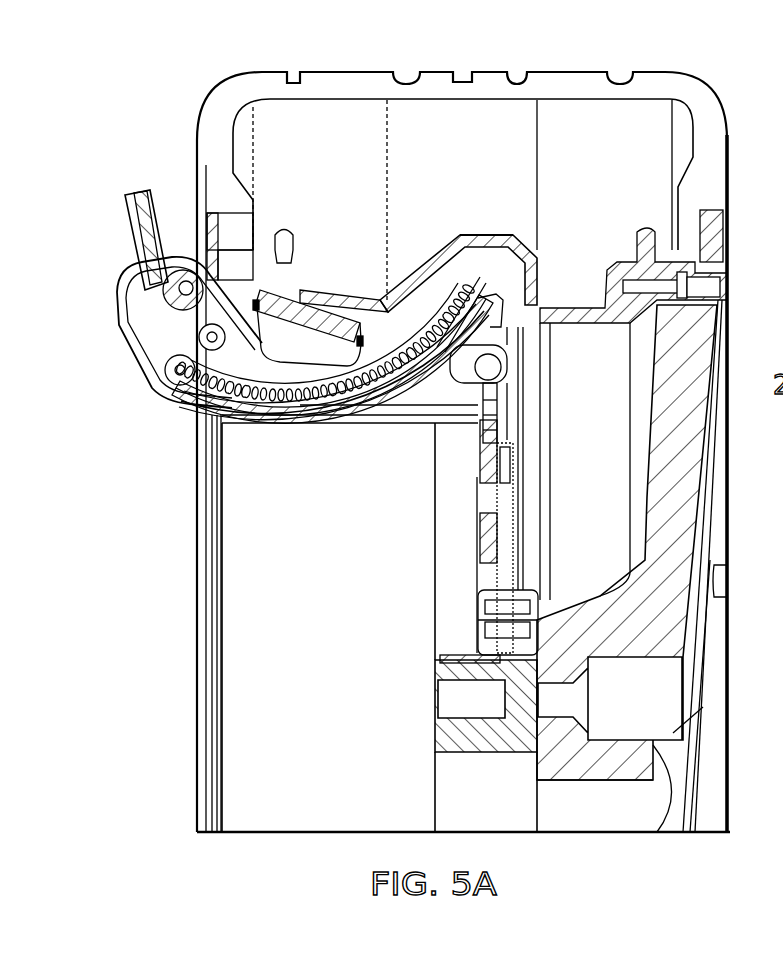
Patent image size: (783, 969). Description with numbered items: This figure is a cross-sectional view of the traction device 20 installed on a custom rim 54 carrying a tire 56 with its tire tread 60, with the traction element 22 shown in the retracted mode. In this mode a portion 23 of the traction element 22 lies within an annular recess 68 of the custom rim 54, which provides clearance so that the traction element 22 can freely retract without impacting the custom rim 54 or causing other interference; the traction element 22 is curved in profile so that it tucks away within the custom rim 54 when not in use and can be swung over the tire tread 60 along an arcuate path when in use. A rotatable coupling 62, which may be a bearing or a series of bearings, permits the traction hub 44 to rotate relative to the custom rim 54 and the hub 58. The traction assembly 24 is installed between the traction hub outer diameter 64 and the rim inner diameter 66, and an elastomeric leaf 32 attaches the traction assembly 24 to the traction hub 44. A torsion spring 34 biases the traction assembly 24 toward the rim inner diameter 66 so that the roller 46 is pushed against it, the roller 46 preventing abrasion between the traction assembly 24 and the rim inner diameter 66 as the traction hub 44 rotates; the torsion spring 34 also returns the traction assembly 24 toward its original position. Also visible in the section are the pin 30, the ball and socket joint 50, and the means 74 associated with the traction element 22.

The traction device 20 is at (182, 515).
The traction element 22 is at (160, 200).
The portion 23 is at (481, 278).
The traction assembly 24 is at (162, 405).
The pin 30 is at (497, 365).
The elastomeric leaf 32 is at (500, 420).
The torsion spring 34 is at (425, 425).
The traction hub 44 is at (314, 717).
The roller 46 is at (306, 292).
The ball and socket joint 50 is at (382, 425).
The custom rim 54 is at (742, 533).
The tire 56 is at (613, 156).
The hub 58 is at (645, 460).
The tire tread 60 is at (546, 70).
The rotatable coupling 62 is at (453, 638).
The traction hub outer diameter 64 is at (260, 425).
The rim inner diameter 66 is at (372, 294).
The annular recess 68 is at (483, 238).
The means 74 is at (462, 213).